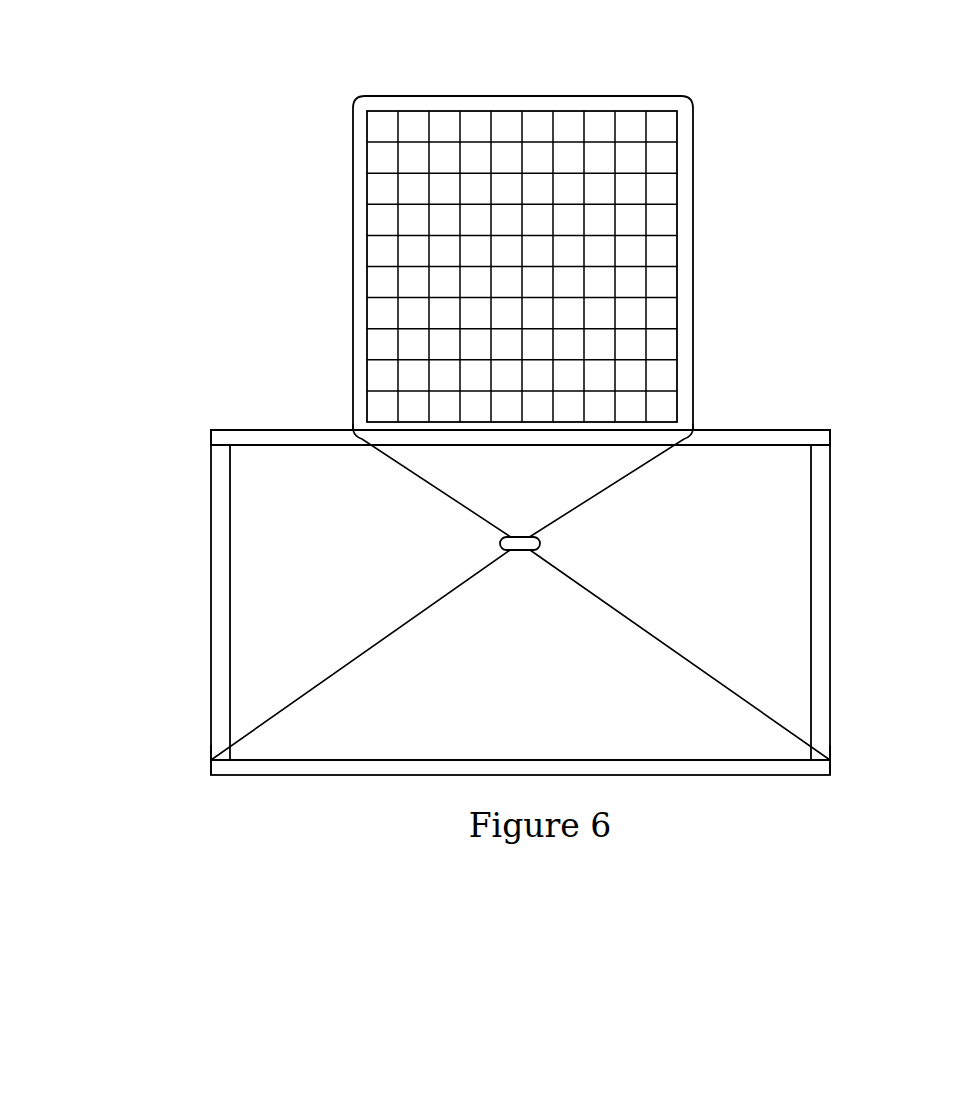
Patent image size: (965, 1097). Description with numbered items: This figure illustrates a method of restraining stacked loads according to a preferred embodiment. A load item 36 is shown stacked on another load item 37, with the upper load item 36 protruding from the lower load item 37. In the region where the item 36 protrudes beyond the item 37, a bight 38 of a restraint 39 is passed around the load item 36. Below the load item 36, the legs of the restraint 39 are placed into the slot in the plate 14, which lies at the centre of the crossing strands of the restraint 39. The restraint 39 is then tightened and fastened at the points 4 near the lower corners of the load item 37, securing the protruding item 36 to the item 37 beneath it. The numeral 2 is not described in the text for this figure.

The base frame 2 is at (733, 776).
The points 4 is at (210, 760).
The plate 14 is at (548, 542).
The load item 36 is at (667, 160).
The load item 37 is at (782, 427).
The bight 38 is at (697, 212).
The restraint 39 is at (740, 695).